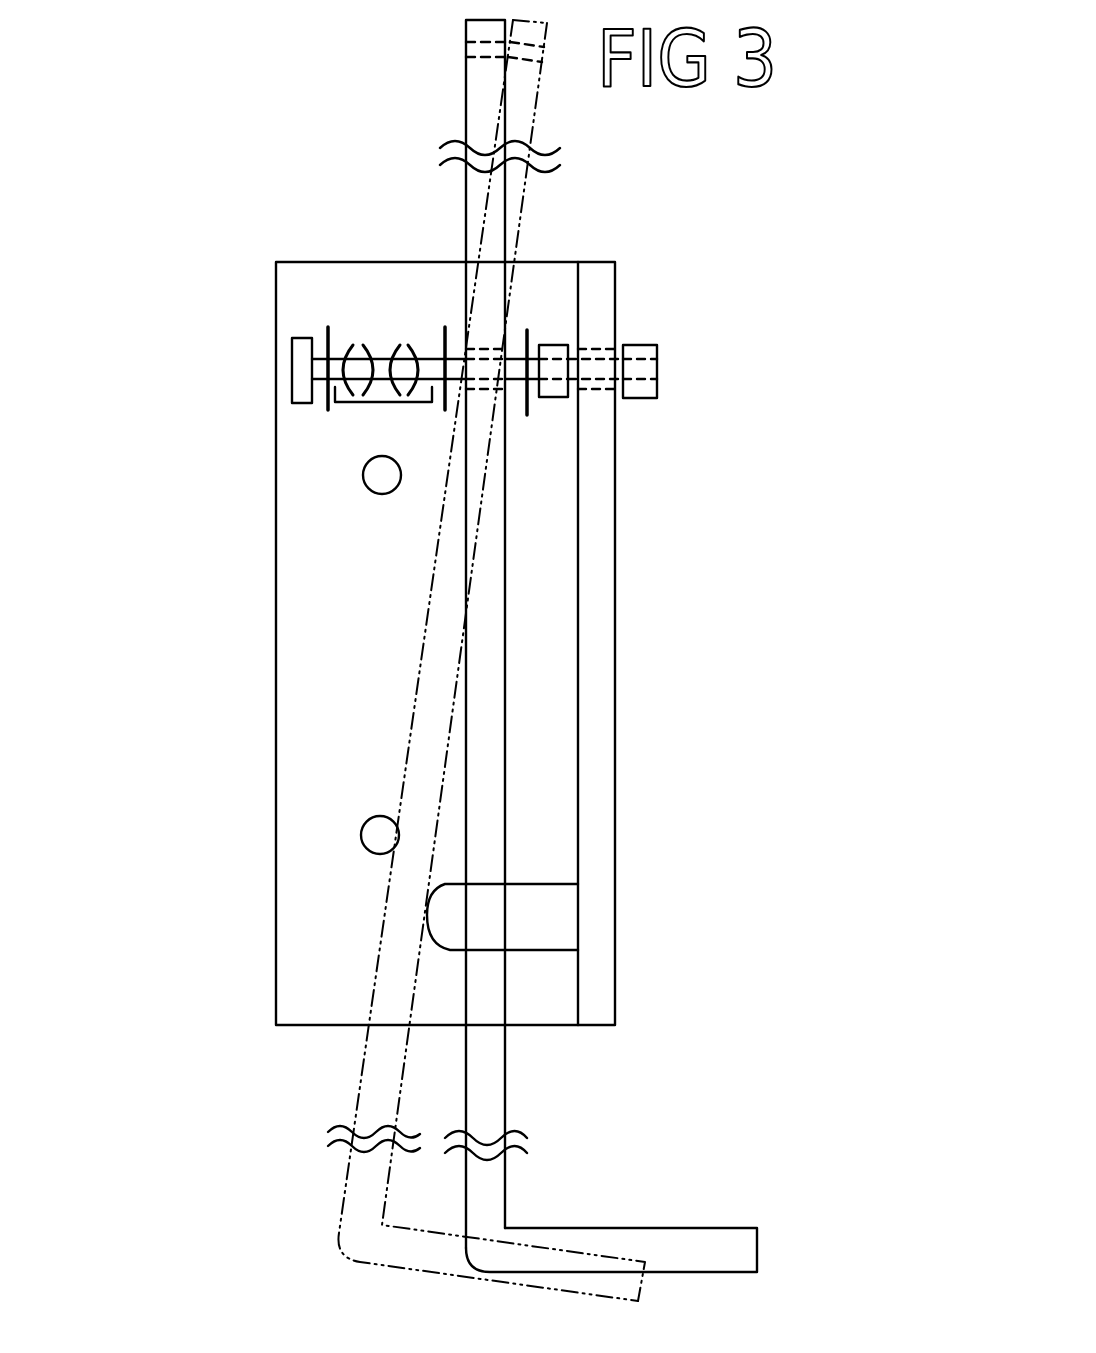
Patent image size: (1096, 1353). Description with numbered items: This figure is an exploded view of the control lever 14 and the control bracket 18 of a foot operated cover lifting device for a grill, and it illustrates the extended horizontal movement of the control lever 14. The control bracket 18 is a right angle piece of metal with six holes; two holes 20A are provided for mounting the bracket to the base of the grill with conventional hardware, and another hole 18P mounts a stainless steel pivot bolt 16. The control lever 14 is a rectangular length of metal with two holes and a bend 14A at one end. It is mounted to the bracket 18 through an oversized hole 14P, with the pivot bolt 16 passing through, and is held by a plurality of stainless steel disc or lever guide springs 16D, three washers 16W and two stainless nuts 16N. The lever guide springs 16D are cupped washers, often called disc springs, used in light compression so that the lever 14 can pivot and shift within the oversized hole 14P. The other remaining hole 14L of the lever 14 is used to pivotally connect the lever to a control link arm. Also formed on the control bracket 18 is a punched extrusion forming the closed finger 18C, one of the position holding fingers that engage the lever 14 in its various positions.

The control lever 14 is at (490, 1085).
The bend 14A is at (493, 1232).
The hole 14L is at (472, 47).
The oversized hole 14P is at (497, 385).
The pivot bolt 16 is at (303, 363).
The washers 16W is at (447, 328).
The lever guide springs 16D is at (380, 405).
The nuts 16N is at (553, 386).
The control bracket 18 is at (385, 693).
The hole 18P is at (592, 356).
The closed finger 18C is at (485, 918).
The holes 20A is at (368, 822).